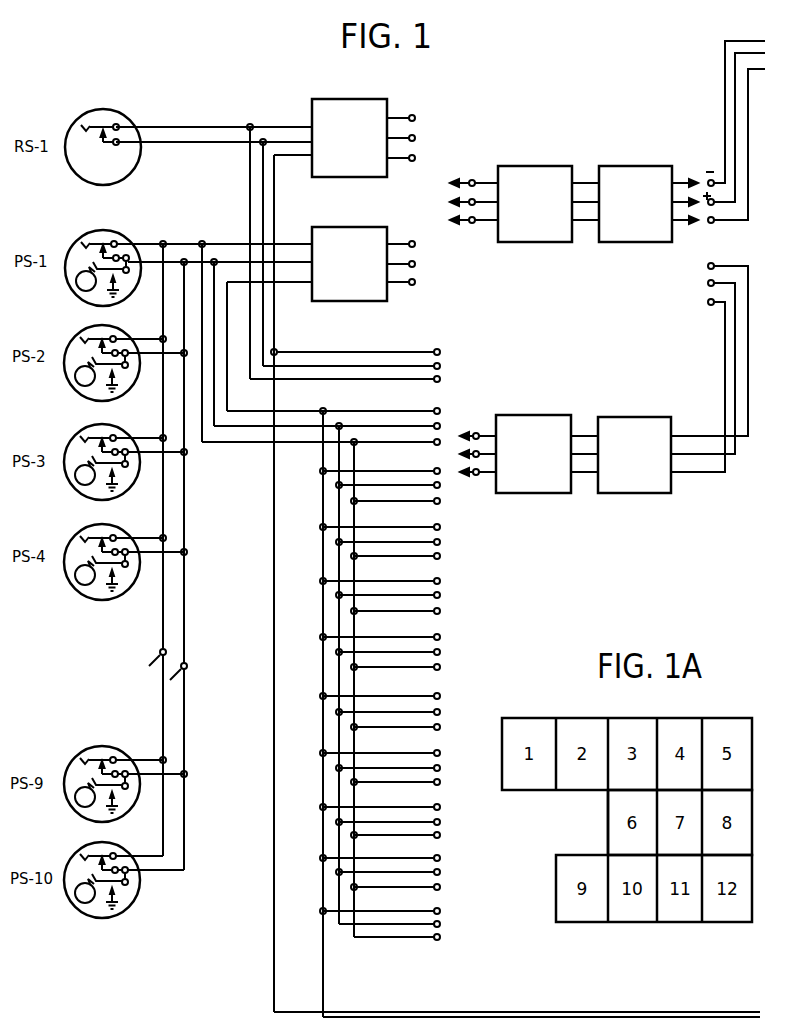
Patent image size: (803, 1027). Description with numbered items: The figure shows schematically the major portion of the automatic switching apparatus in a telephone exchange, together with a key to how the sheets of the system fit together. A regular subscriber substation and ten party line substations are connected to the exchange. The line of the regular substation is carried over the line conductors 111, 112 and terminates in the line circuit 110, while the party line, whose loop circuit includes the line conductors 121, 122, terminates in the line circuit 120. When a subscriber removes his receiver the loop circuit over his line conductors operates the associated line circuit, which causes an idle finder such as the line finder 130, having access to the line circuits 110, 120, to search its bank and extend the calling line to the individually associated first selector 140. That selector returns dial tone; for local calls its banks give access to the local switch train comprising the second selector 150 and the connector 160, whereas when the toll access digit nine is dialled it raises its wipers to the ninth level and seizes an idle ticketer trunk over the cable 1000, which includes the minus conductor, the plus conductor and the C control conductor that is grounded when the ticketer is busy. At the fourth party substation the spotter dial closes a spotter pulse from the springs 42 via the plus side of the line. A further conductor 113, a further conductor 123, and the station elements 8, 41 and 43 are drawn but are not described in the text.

The rotary dial / signaling contact of recorder station RS-1 8 is at (101, 139).
The handset (telephone instrument) of patient station PS-4 41 is at (77, 578).
The springs 42 is at (118, 572).
The hookswitch of patient station PS-4 43 is at (80, 551).
The line circuit 110 is at (363, 138).
The line conductor 111 is at (203, 123).
The line conductor 112 is at (205, 144).
The conductor from line equipment 110 to terminals 113 is at (276, 192).
The line circuit 120 is at (363, 264).
The line conductor 121 is at (306, 240).
The line conductor 122 is at (306, 258).
The conductor from PS-1 to line equipment 120 123 is at (306, 278).
The line finder 130 is at (524, 204).
The first selector 140 is at (648, 204).
The second selector 150 is at (634, 455).
The connector 160 is at (529, 454).
The cable 1000 is at (714, 132).